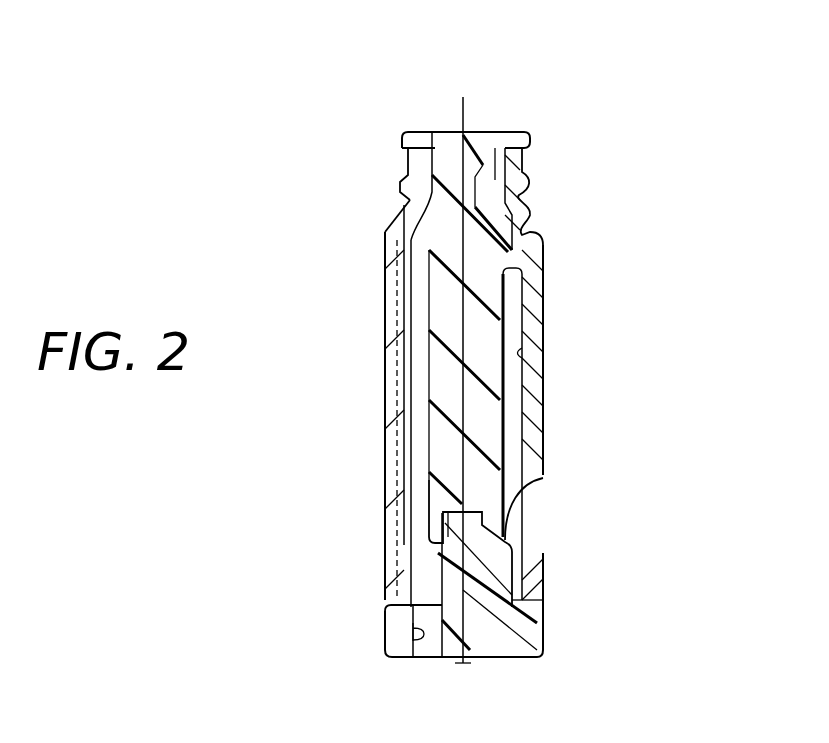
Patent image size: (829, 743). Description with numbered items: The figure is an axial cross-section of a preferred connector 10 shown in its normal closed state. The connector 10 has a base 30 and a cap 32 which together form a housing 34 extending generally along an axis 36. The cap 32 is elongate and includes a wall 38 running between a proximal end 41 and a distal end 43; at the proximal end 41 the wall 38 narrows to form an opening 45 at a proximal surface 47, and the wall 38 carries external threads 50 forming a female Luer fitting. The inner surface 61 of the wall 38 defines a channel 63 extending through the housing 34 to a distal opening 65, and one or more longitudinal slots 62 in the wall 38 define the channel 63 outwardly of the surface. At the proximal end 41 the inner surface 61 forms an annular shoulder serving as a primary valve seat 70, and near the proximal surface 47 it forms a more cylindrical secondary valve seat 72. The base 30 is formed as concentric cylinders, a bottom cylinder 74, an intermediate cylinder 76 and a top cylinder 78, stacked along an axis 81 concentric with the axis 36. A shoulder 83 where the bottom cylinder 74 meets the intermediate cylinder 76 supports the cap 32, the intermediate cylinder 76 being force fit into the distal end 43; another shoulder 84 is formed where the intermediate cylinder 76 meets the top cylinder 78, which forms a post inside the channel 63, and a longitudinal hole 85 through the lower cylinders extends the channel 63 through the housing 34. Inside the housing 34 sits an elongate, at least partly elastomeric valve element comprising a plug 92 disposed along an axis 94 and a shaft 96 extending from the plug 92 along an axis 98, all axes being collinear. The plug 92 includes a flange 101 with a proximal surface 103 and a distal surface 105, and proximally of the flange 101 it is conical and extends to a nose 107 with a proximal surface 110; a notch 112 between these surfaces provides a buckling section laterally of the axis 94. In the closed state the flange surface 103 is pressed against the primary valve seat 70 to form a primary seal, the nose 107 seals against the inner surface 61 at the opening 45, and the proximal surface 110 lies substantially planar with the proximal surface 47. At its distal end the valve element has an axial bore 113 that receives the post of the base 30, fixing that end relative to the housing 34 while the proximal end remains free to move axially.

The connector 10 is at (290, 414).
The base 30 is at (585, 612).
The cap 32 is at (566, 408).
The housing 34 is at (348, 537).
The axis 36 is at (466, 101).
The wall 38 is at (543, 335).
The proximal end 41 is at (362, 234).
The distal end 43 is at (560, 546).
The opening 45 is at (445, 108).
The proximal surface 47 is at (510, 133).
The external threads 50 is at (403, 140).
The inner surface 61 is at (543, 363).
The longitudinal slots 62 is at (442, 523).
The channel 63 is at (415, 324).
The distal opening 65 is at (424, 576).
The primary valve seat 70 is at (543, 244).
The secondary valve seat 72 is at (433, 130).
The bottom cylinder 74 is at (533, 638).
The intermediate cylinder 76 is at (543, 579).
The top cylinder 78 is at (470, 512).
The axis 81 is at (465, 664).
The shoulder 83 is at (547, 604).
The shoulder 84 is at (543, 484).
The longitudinal hole 85 is at (415, 641).
The plug 92 is at (416, 268).
The axis 94 is at (412, 155).
The shaft 96 is at (433, 354).
The axis 98 is at (457, 381).
The flange 101 is at (387, 228).
The proximal surface 103 is at (412, 207).
The distal surface 105 is at (543, 279).
The nose 107 is at (528, 150).
The proximal surface 110 is at (477, 131).
The notch 112 is at (486, 192).
The axial bore 113 is at (446, 510).